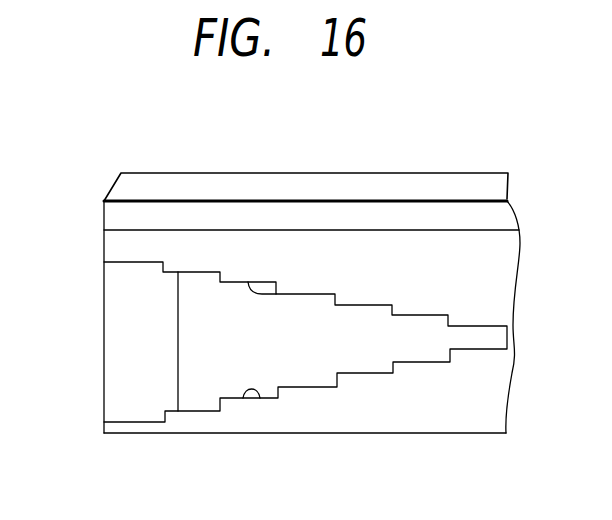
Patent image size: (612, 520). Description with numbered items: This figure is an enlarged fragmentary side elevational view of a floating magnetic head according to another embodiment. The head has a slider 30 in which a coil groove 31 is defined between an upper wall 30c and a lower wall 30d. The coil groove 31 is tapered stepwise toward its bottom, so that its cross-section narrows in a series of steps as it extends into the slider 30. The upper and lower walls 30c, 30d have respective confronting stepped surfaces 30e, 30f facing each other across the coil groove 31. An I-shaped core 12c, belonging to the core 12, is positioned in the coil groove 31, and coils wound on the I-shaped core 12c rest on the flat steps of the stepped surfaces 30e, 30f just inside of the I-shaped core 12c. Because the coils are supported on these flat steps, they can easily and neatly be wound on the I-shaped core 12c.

The substrate block 12 is at (100, 311).
The I-shaped core 12c is at (125, 360).
The slider 30 is at (471, 190).
The upper wall 30c is at (232, 250).
The lower wall 30d is at (277, 414).
The stepped surface 30e is at (277, 293).
The stepped surface 30f is at (243, 398).
The coil groove 31 is at (340, 340).